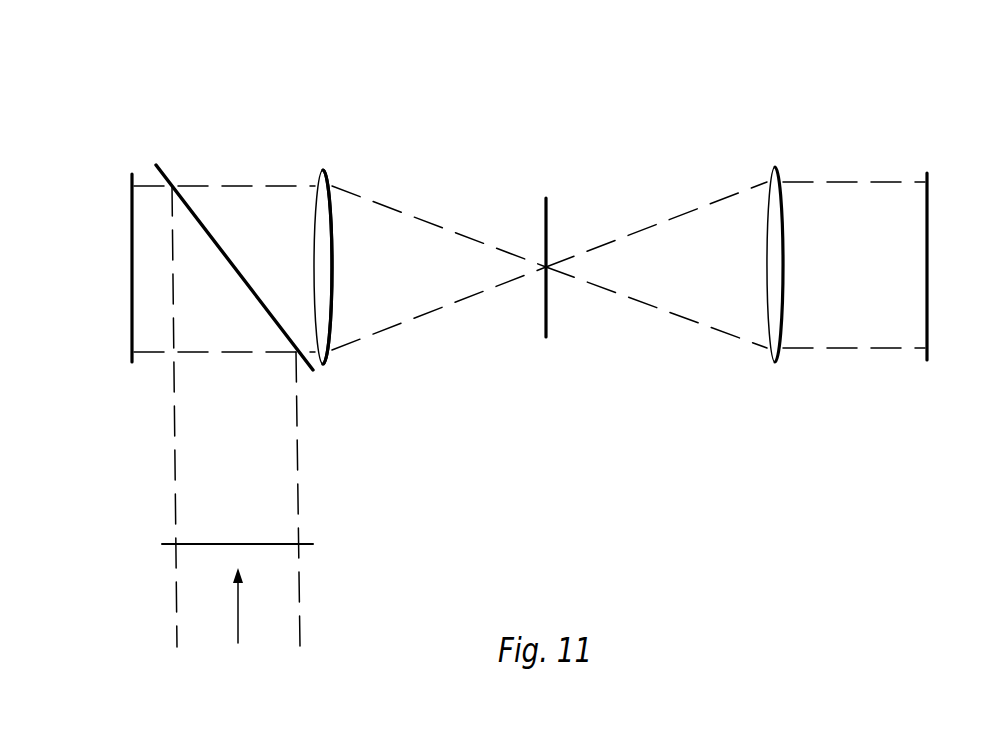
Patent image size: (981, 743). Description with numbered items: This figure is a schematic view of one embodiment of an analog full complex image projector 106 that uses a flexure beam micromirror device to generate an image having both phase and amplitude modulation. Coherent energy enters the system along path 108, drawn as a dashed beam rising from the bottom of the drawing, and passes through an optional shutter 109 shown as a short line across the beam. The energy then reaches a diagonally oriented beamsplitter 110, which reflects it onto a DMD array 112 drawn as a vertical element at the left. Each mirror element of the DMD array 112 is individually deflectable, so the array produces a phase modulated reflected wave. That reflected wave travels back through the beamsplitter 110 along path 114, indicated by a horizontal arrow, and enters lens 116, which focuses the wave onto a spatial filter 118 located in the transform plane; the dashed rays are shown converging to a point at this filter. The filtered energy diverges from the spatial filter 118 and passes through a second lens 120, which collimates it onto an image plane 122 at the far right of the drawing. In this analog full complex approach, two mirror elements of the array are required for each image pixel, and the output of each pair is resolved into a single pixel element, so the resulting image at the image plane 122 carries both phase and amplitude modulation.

The analog full complex image projector 106 is at (573, 153).
The path 108 is at (245, 610).
The optional shutter 109 is at (313, 540).
The beamsplitter 110 is at (168, 180).
The DMD array 112 is at (127, 217).
The path 114 is at (253, 268).
The lens 116 is at (335, 300).
The spatial filter 118 is at (557, 313).
The lens 120 is at (783, 190).
The image plane 122 is at (918, 248).